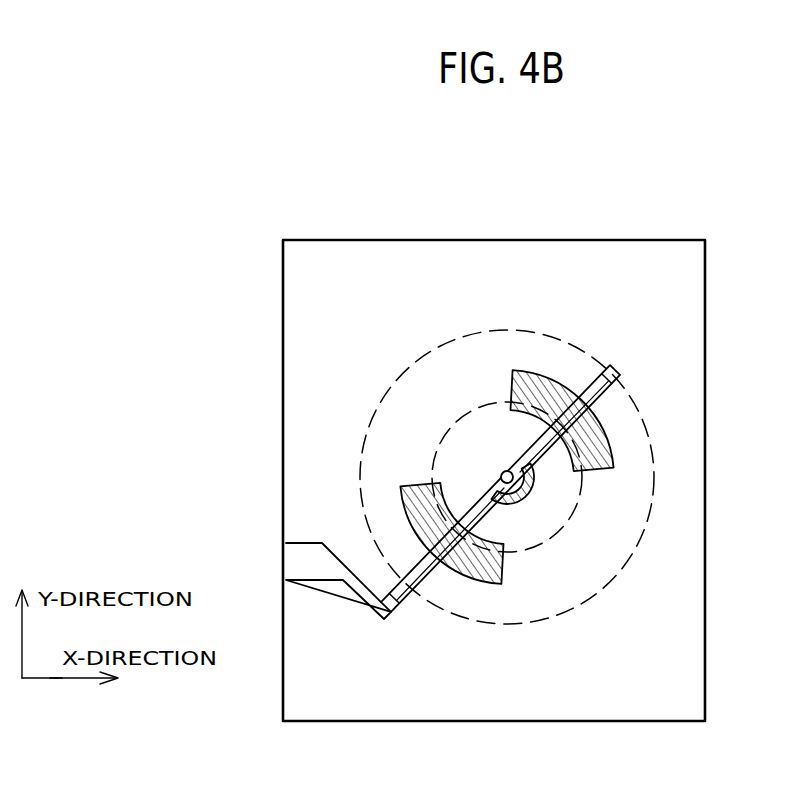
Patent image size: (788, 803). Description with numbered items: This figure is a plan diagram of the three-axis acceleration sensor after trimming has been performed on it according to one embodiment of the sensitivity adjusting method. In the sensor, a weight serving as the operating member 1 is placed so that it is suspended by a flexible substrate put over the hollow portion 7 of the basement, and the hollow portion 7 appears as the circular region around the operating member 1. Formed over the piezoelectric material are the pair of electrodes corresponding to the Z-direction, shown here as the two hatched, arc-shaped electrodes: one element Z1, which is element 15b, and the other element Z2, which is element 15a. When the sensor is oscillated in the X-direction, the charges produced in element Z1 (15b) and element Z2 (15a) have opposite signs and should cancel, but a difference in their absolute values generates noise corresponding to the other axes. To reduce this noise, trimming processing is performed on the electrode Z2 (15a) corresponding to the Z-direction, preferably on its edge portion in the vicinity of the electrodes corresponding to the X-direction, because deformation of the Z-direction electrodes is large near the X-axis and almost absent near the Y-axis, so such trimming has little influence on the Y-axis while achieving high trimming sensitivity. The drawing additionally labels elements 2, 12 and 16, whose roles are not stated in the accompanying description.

The operating member 1 is at (520, 555).
The housing frame 2 is at (282, 353).
The hollow portion 7 is at (508, 352).
The drive arm 12 is at (297, 563).
The element Z2 15a is at (455, 565).
The element Z1 15b is at (590, 372).
The sector weight 16 is at (420, 484).
The element Z1 is at (623, 413).
The element Z2 is at (388, 532).